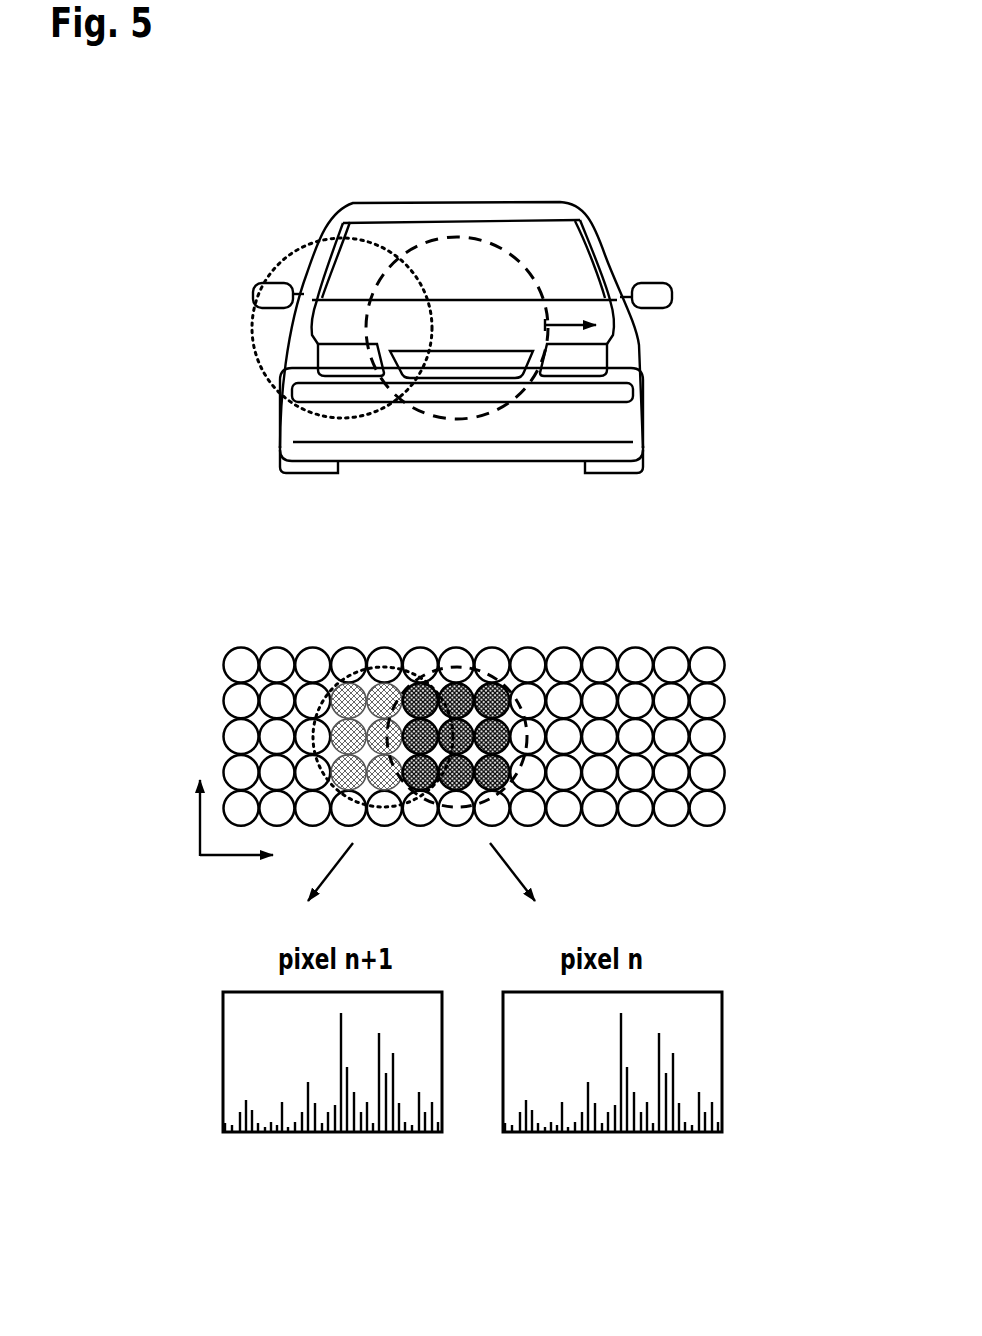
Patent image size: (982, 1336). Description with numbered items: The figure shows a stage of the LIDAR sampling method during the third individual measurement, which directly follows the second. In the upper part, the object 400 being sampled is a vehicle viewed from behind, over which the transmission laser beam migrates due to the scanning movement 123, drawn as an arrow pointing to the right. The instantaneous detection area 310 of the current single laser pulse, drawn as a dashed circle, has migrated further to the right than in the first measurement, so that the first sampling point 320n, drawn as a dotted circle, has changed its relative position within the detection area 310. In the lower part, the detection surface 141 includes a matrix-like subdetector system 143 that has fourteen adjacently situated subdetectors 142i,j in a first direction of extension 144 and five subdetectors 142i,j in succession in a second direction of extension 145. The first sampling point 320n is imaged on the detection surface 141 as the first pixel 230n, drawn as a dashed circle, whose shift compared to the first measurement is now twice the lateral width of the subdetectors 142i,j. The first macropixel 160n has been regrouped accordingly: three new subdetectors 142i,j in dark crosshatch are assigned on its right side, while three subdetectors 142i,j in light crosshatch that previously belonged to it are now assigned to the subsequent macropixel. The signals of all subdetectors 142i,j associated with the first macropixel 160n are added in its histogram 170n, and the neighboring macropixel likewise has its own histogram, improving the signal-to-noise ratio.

The object 400 is at (405, 200).
The detection area 310 is at (455, 237).
The first sampling point 320n is at (300, 355).
The scanning movement 123 is at (558, 325).
The detection surface 141 is at (737, 838).
The subdetectors 142i,j is at (707, 737).
The matrix-like subdetector system 143 is at (676, 852).
The first direction of extension 144 is at (230, 857).
The second direction of extension 145 is at (197, 827).
The first macropixel 160n is at (457, 670).
The first pixel 230n is at (519, 680).
The histogram 170n is at (722, 1063).